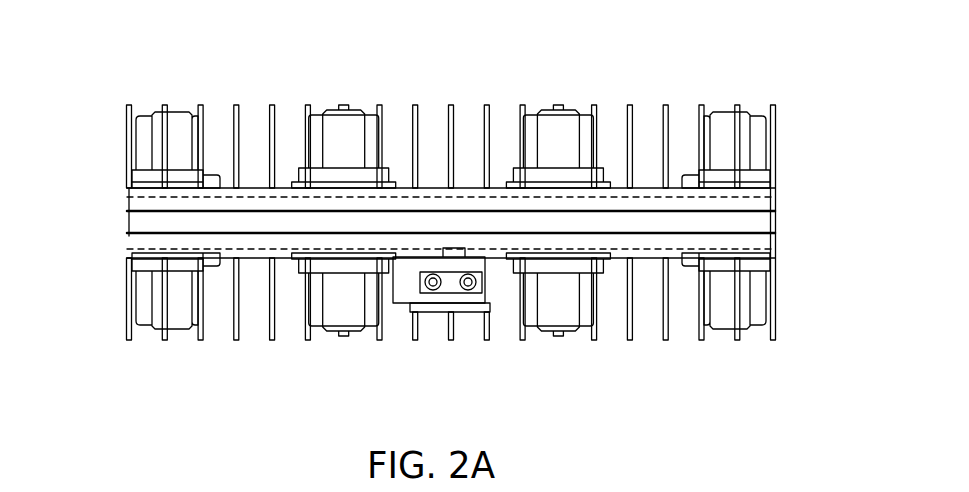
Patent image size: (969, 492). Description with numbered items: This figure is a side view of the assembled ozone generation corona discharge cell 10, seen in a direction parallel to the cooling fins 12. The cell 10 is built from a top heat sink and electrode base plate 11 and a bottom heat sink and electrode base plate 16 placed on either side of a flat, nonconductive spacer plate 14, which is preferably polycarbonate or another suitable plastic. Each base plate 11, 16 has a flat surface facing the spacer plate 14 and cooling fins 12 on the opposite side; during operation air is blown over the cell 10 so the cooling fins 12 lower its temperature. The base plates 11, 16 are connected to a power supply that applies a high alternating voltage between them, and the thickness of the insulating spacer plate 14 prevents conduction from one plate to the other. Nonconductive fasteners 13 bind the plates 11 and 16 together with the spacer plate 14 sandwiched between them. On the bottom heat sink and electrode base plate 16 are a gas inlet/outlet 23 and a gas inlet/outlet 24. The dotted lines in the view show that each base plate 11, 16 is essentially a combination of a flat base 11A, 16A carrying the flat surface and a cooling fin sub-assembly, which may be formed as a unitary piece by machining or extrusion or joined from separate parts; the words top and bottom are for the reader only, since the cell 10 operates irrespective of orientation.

The electrical discharge ozone generation cell 10 is at (147, 58).
The top heat sink and electrode base plate 11 is at (112, 143).
The flat base 11A is at (770, 203).
The cooling fins 12 is at (452, 105).
The nonconductive fasteners 13 is at (718, 117).
The spacer plate 14 is at (767, 225).
The bottom heat sink and electrode base plate 16 is at (788, 302).
The flat base 16A is at (128, 240).
The gas inlet/outlet 23 is at (433, 288).
The gas inlet/outlet 24 is at (468, 288).